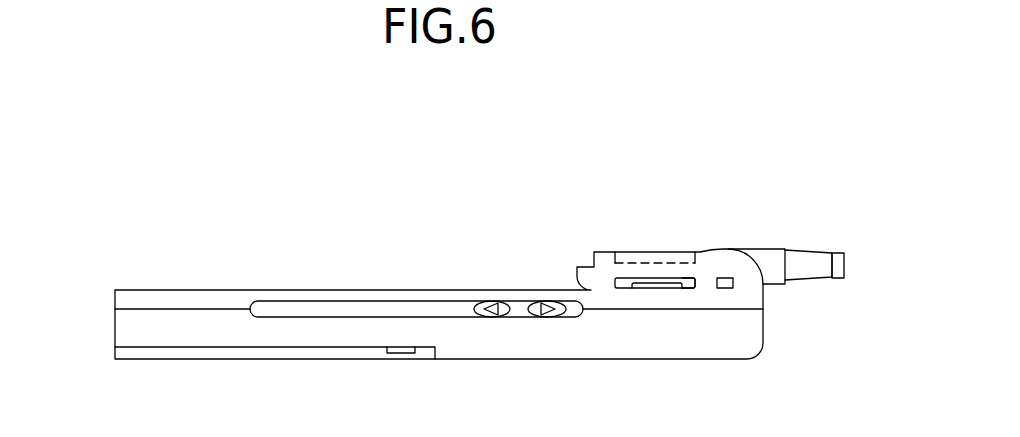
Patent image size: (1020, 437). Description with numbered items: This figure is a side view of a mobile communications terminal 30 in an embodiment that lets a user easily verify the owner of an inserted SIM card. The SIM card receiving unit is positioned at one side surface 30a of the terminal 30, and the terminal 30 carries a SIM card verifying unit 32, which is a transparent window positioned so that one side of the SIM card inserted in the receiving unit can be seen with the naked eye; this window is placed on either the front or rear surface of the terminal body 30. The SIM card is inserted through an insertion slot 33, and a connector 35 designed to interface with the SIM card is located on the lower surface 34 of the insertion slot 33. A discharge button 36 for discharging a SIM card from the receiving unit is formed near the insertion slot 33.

The communications terminal 30 is at (190, 302).
The side surface 30a is at (475, 340).
The SIM card verifying unit 32 is at (647, 250).
The insertion slot 33 is at (690, 289).
The lower surface 34 is at (622, 289).
The connector 35 is at (650, 289).
The discharge button 36 is at (722, 278).